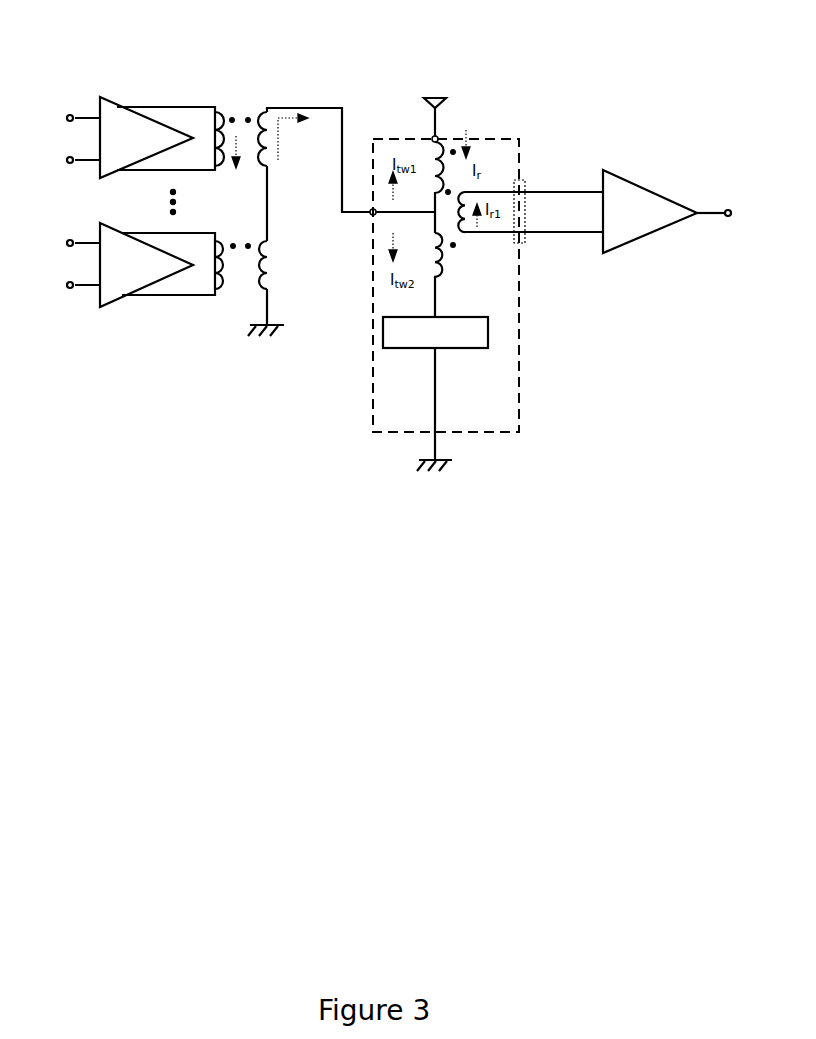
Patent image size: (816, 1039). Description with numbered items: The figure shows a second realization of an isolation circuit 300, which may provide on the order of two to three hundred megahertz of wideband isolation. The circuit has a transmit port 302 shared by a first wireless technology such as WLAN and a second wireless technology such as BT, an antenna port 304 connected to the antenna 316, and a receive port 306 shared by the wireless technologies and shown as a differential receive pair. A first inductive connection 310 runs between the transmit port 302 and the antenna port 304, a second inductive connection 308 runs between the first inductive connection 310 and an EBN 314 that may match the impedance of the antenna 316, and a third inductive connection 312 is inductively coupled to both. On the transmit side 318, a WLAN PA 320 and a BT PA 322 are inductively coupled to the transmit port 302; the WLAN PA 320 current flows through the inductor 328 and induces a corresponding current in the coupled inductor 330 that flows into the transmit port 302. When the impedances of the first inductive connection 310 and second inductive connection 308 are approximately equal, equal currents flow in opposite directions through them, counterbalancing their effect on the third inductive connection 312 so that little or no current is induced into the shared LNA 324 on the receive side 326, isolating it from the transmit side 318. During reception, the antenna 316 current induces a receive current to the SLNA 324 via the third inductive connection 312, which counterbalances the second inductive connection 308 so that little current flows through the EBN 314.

The isolation circuit 300 is at (446, 285).
The transmit port 302 is at (371, 215).
The antenna port 304 is at (439, 136).
The receive port 306 is at (522, 180).
The second inductive connection 308 is at (431, 272).
The first inductive connection 310 is at (433, 166).
The third inductive connection 312 is at (460, 243).
The EBN 314 is at (435, 394).
The antenna 316 is at (431, 97).
The transmit side 318 is at (186, 97).
The WLAN PA 320 is at (101, 172).
The BT PA 322 is at (101, 297).
The shared LNA 324 is at (601, 242).
The receive side 326 is at (591, 149).
The inductor 328 is at (222, 114).
The coupled inductor 330 is at (262, 114).